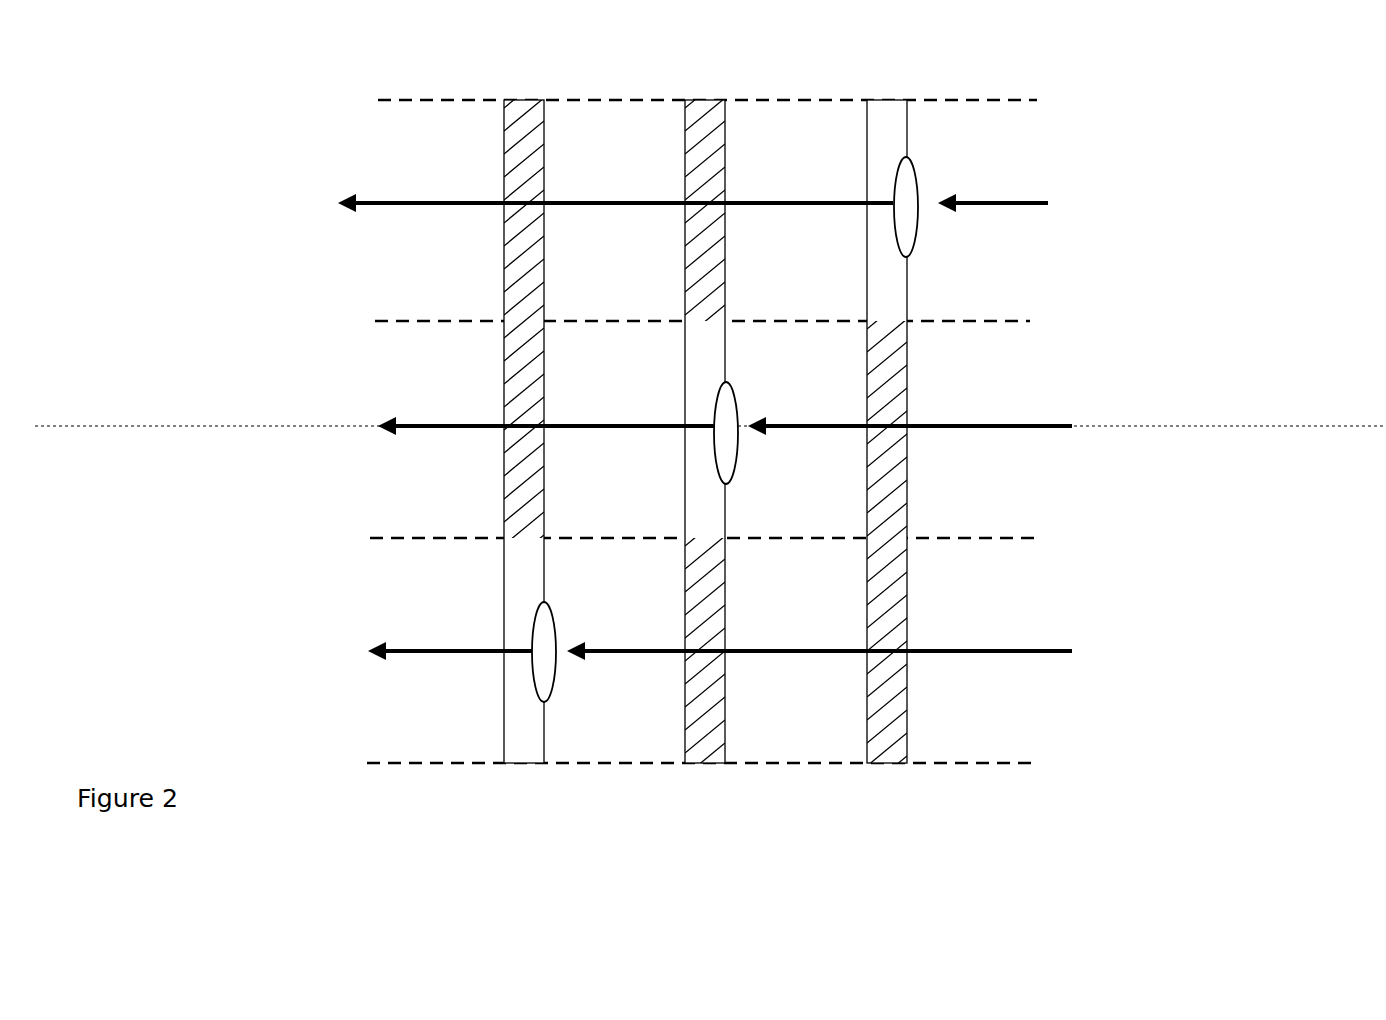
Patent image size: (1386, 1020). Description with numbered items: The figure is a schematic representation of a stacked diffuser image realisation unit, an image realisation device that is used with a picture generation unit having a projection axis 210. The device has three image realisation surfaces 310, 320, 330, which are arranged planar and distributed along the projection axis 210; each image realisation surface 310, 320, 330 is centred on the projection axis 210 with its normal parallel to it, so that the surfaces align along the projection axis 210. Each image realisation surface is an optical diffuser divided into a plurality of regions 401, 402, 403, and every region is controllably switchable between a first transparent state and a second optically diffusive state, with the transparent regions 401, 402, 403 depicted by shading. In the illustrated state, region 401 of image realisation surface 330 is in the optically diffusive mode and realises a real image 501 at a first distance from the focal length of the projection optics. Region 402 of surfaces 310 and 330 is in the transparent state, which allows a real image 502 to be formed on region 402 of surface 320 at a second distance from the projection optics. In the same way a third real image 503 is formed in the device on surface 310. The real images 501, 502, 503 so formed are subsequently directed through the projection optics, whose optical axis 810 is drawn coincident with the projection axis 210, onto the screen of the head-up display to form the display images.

The projection axis 210 is at (1185, 425).
The image realisation surface 310 is at (527, 99).
The image realisation surface 320 is at (708, 99).
The image realisation surface 330 is at (890, 99).
The region 401 is at (1035, 131).
The region 402 is at (1035, 348).
The region 403 is at (1035, 568).
The real image 501 is at (914, 240).
The real image 502 is at (732, 470).
The real image 503 is at (552, 684).
The optical axis 810 is at (140, 426).